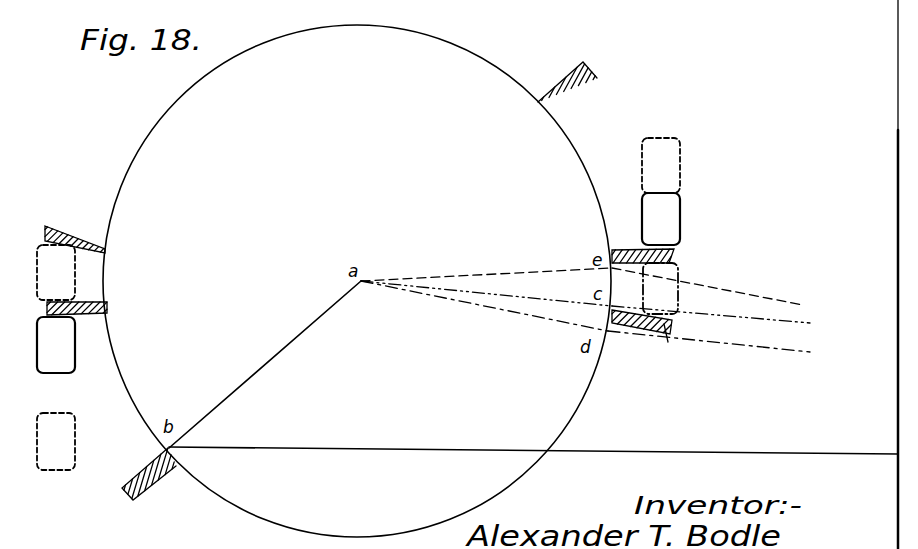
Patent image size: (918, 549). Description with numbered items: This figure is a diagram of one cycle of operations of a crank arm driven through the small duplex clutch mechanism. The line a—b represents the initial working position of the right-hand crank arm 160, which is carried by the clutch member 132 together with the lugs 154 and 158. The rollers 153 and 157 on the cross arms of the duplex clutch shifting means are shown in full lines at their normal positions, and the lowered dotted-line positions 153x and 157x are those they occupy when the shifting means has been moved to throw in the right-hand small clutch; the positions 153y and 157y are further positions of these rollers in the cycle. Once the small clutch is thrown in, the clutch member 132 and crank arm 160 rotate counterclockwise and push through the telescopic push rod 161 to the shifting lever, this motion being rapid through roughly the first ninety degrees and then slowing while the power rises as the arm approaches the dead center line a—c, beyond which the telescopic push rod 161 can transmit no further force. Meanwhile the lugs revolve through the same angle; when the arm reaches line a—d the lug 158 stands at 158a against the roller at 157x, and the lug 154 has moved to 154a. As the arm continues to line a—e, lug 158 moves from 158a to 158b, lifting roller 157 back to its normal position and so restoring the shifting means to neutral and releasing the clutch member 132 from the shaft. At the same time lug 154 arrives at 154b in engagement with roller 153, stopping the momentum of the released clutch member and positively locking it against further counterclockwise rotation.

The clutch member 132 is at (150, 147).
The lug 154 is at (597, 73).
The lug position 154a is at (46, 227).
The lug position 154b is at (103, 296).
The cross arm roller 153 is at (60, 343).
The cross arm roller lowered position 153x is at (62, 442).
The cross arm roller position 153y is at (62, 270).
The cross arm roller 157 is at (665, 220).
The cross arm roller lowered position 157x is at (668, 272).
The cross arm roller position 157y is at (668, 170).
The lug 158 is at (146, 490).
The lug position 158a is at (676, 332).
The lug position 158b is at (673, 250).
The crank arm 160 is at (262, 368).
The telescopic push rod 161 is at (443, 450).